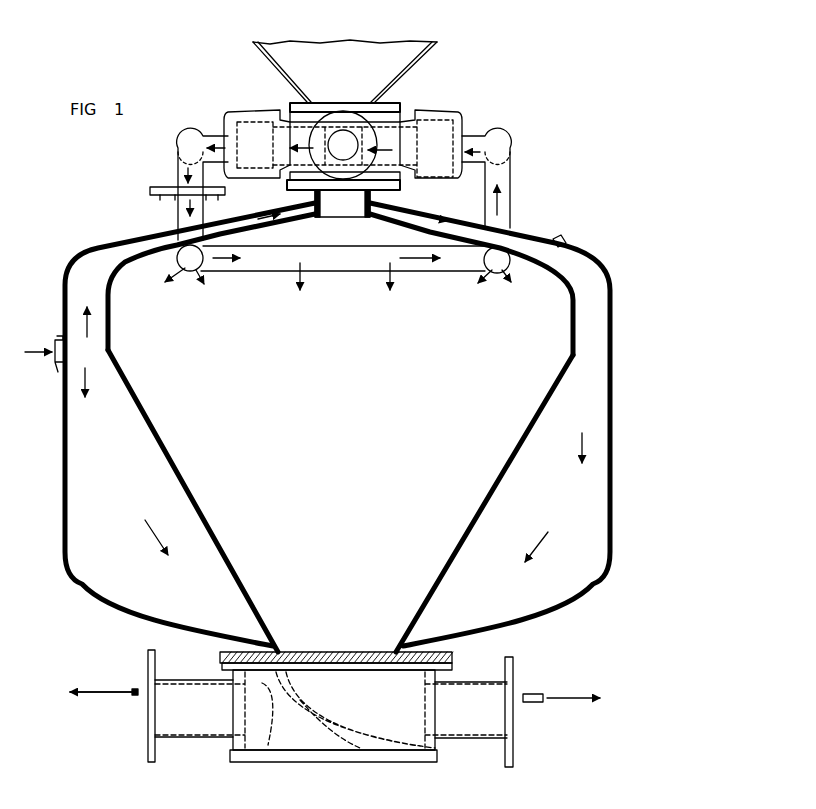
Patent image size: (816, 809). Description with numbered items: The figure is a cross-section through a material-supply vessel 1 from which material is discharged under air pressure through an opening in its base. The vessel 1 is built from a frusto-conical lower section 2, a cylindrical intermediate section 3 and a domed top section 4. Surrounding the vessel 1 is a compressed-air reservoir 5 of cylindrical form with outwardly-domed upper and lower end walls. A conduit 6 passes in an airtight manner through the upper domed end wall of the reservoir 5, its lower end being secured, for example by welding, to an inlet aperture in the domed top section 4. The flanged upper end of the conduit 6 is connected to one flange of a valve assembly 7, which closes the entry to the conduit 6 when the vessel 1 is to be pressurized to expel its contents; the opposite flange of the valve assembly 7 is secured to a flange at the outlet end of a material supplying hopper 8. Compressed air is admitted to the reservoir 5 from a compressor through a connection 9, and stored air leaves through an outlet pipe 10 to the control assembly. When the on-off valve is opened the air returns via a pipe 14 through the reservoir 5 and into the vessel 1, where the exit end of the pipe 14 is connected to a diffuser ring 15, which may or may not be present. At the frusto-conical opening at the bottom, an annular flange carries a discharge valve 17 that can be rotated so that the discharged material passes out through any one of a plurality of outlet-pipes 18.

The material-supply vessel 1 is at (145, 465).
The frusto-conical lower section 2 is at (227, 557).
The cylindrical intermediate section 3 is at (112, 322).
The domed top section 4 is at (146, 258).
The compressed-air reservoir 5 is at (606, 437).
The conduit 6 is at (314, 194).
The valve assembly 7 is at (392, 120).
The material supplying hopper 8 is at (277, 70).
The connection 9 is at (56, 375).
The outlet pipe 10 is at (511, 205).
The pipe 14 is at (178, 214).
The diffuser ring 15 is at (259, 271).
The discharge valve 17 is at (268, 684).
The outlet-pipes 18 is at (186, 722).